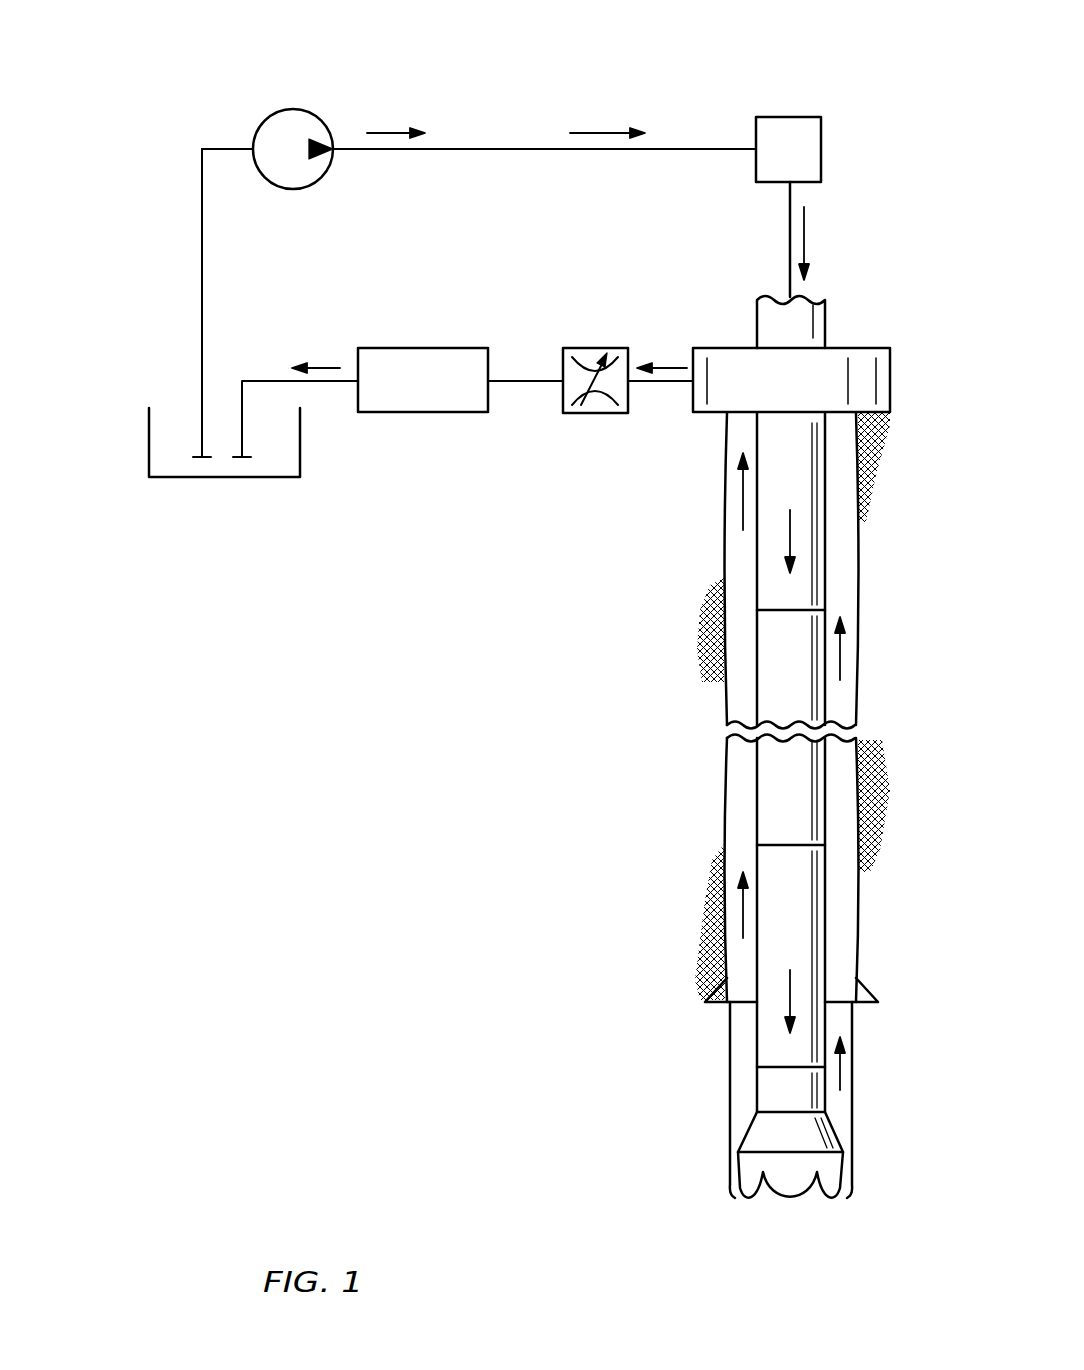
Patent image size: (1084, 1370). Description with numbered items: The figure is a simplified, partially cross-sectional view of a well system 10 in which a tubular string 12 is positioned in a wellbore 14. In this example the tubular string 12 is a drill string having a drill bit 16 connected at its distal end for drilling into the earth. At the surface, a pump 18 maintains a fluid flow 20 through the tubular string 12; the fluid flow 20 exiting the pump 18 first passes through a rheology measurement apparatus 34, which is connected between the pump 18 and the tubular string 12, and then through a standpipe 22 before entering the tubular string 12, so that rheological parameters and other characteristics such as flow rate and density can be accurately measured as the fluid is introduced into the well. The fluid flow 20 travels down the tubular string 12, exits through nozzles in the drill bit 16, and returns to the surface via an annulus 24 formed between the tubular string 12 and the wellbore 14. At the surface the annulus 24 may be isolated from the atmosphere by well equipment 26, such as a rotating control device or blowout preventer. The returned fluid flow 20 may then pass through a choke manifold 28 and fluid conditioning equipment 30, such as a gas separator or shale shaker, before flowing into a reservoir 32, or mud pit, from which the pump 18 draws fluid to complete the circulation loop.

The well system 10 is at (642, 66).
The tubular string 12 is at (827, 550).
The wellbore 14 is at (728, 818).
The drill bit 16 is at (748, 1125).
The pump 18 is at (293, 108).
The fluid flow 20 is at (392, 133).
The standpipe 22 is at (790, 207).
The annulus 24 is at (737, 555).
The well equipment 26 is at (890, 377).
The choke manifold 28 is at (583, 348).
The fluid conditioning equipment 30 is at (432, 348).
The reservoir 32 is at (149, 438).
The rheology measurement apparatus 34 is at (818, 117).